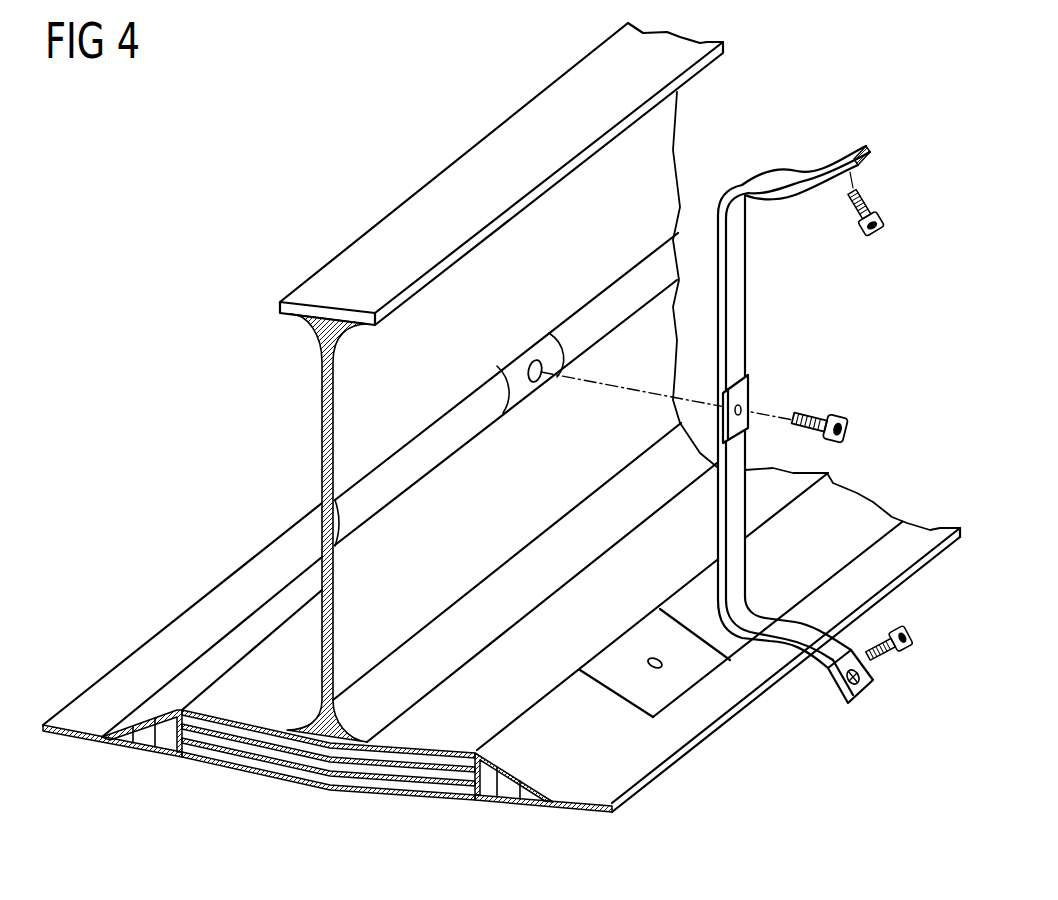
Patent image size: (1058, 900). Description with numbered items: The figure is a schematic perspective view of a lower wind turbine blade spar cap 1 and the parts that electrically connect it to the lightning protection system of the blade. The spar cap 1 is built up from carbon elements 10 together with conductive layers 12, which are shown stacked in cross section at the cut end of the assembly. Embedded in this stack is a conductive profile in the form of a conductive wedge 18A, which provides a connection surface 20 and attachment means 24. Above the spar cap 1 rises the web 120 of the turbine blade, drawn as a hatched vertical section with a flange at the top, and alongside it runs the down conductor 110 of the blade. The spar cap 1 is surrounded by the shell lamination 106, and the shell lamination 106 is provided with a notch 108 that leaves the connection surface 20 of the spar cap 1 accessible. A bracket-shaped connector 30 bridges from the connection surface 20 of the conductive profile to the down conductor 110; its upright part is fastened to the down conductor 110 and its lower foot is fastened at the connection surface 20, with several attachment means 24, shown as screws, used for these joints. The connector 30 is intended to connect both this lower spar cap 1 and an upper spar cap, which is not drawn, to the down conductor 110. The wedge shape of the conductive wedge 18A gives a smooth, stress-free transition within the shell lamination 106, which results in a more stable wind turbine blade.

The wind turbine blade spar cap 1 is at (176, 799).
The carbon elements 10 is at (375, 783).
The conductive layers 12 is at (280, 778).
The conductive wedge 18A is at (493, 784).
The connection surface 20 is at (648, 695).
The attachment means 24 is at (860, 225).
The connector 30 is at (795, 628).
The shell lamination 106 is at (548, 766).
The notch 108 is at (683, 660).
The down conductor 110 is at (483, 413).
The web 120 is at (360, 417).